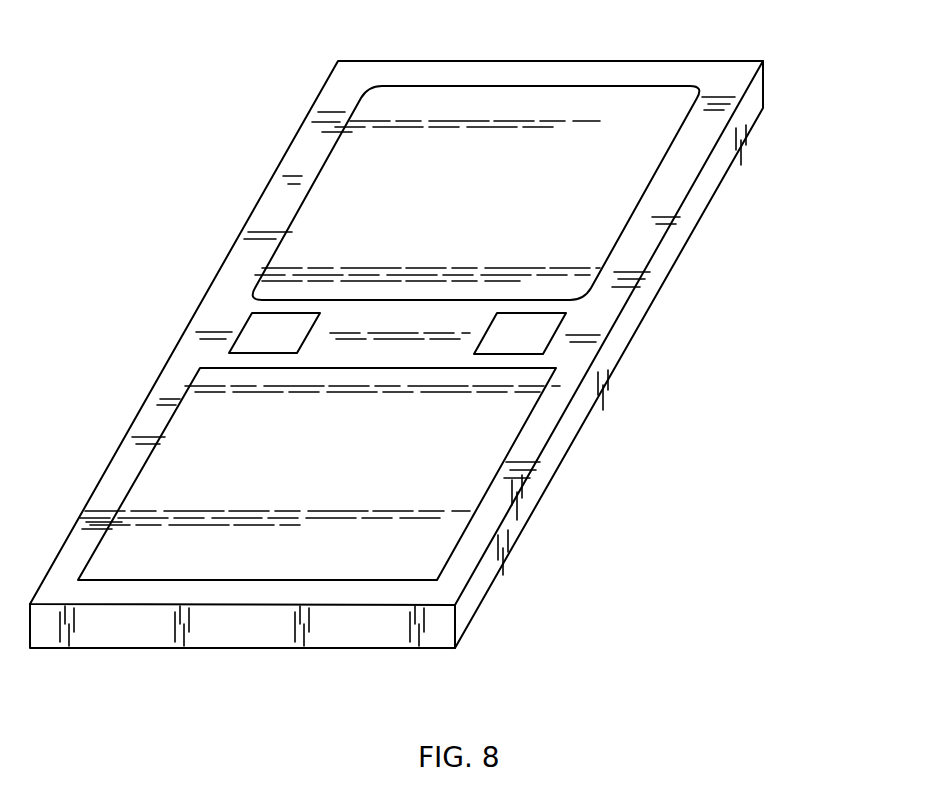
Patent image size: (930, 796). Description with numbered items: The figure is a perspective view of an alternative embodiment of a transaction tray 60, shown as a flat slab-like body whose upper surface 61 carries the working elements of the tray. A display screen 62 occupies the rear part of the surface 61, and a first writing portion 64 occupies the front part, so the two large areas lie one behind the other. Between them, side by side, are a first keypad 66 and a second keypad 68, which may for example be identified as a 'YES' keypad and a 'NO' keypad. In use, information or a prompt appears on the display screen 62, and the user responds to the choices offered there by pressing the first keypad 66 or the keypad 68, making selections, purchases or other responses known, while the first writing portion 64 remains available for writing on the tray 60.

The tray 60 is at (735, 125).
The surface 61 is at (132, 445).
The display screen 62 is at (593, 120).
The first writing portion 64 is at (433, 497).
The first keypad 66 is at (542, 338).
The keypad 68 is at (252, 325).